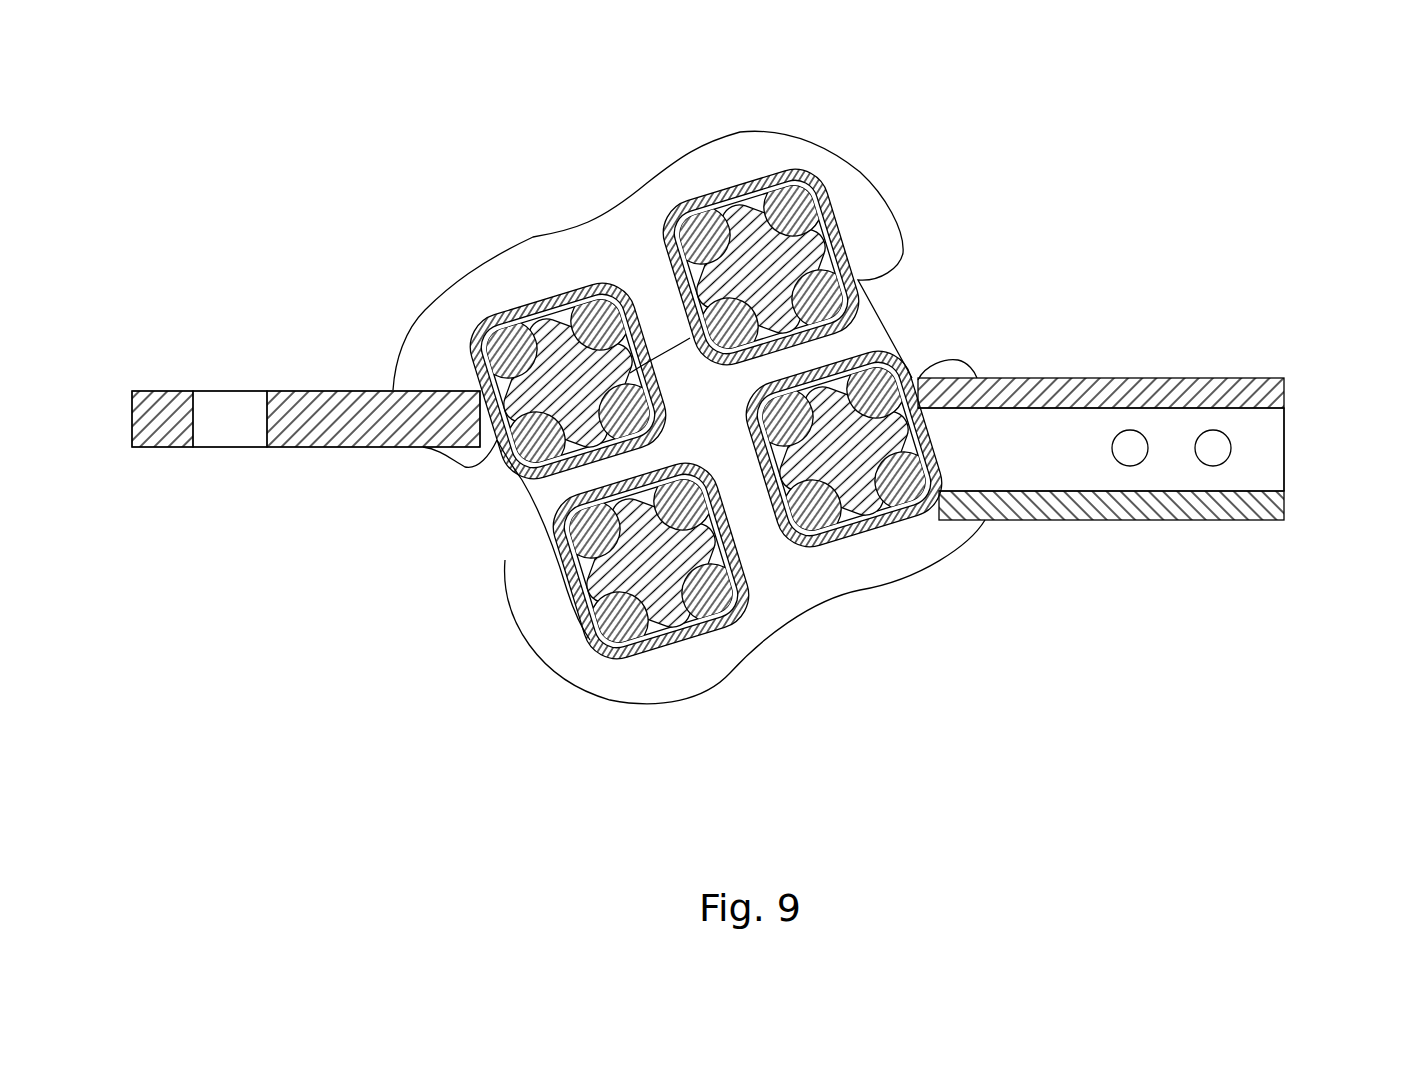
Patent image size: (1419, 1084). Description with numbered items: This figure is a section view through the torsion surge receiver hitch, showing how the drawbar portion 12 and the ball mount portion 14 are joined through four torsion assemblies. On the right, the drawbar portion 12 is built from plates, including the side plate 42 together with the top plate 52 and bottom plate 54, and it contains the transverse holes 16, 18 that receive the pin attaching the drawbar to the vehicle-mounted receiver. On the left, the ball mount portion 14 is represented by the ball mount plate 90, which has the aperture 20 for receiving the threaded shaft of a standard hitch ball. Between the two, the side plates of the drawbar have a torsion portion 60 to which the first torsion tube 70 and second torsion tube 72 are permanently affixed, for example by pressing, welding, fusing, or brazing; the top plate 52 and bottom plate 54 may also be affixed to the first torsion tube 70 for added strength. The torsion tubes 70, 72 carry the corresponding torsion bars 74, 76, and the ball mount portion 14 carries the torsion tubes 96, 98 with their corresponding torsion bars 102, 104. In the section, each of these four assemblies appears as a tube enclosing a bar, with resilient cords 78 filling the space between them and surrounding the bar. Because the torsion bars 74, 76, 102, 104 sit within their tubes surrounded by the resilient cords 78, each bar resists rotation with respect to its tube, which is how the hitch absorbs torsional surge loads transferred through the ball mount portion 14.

The drawbar portion 12 is at (1203, 318).
The ball mount portion 14 is at (192, 310).
The transverse hole 16 is at (1130, 467).
The transverse hole 18 is at (1213, 467).
The aperture 20 is at (206, 426).
The side plate 42 is at (1268, 448).
The top plate 52 is at (1124, 385).
The bottom plate 54 is at (1185, 512).
The torsion portion 60 is at (825, 640).
The first torsion tube 70 is at (858, 534).
The second torsion tube 72 is at (651, 650).
The torsion bar 74 is at (665, 600).
The torsion bar 76 is at (924, 516).
The resilient cords 78 is at (786, 195).
The ball mount plate 90 is at (350, 430).
The torsion tube 96 is at (802, 178).
The torsion tube 98 is at (472, 350).
The torsion bar 102 is at (806, 262).
The torsion bar 104 is at (505, 432).